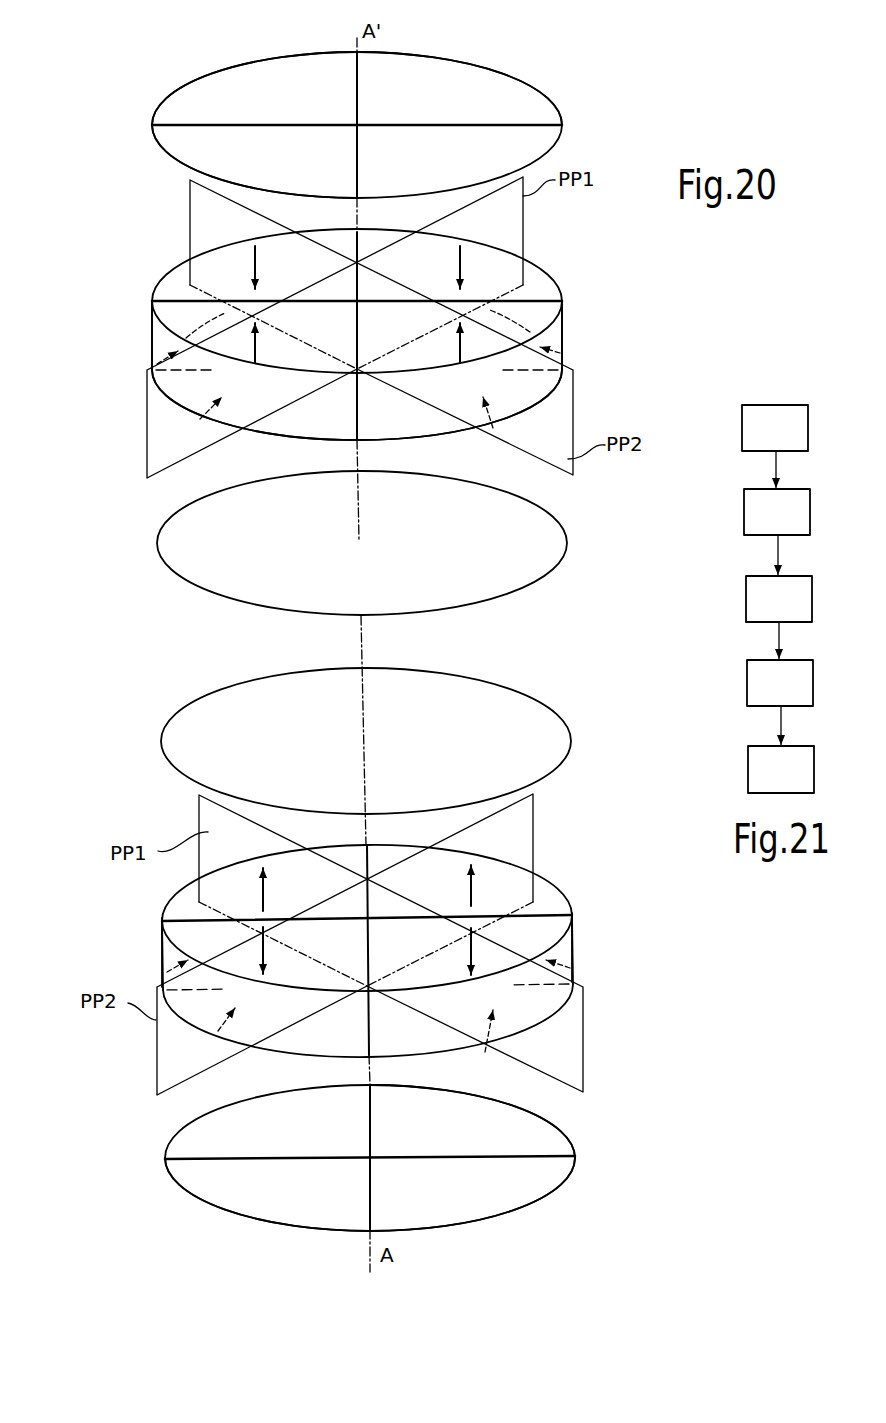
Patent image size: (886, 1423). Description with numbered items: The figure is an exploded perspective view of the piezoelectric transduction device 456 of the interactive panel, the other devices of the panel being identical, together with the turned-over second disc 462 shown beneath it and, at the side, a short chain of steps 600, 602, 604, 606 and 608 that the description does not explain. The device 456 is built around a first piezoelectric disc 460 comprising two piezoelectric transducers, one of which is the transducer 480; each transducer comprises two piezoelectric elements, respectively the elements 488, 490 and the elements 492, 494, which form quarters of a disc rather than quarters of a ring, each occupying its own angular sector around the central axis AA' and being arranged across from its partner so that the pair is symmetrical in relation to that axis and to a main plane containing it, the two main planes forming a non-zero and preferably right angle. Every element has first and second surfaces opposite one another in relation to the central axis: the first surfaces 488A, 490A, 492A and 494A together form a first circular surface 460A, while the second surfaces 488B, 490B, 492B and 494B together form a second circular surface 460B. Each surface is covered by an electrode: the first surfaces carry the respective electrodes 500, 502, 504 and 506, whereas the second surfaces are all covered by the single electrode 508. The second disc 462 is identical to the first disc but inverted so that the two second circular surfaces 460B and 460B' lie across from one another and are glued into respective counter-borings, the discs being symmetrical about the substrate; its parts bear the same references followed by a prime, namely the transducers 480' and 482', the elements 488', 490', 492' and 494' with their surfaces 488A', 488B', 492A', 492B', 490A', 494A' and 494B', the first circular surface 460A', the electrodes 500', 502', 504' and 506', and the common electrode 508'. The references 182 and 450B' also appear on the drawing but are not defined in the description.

In FIG. 20, the piezoelectric transduction device 456 is at (124, 92).
In FIG. 20, the second disc 462 is at (606, 722).
In FIG. 20, the electrode 500 is at (357, 108).
In FIG. 20, the electrode 502 is at (222, 161).
In FIG. 20, the electrode 504 is at (254, 71).
In FIG. 20, the electrode 506 is at (493, 91).
In FIG. 20, the electrode 508 is at (397, 543).
In FIG. 20, the first piezoelectric disc 460 is at (606, 291).
In FIG. 20, the first circular surface 460A is at (357, 220).
In FIG. 20, the second circular surface 460B is at (357, 426).
In FIG. 20, the piezoelectric element 488 is at (598, 310).
In FIG. 20, the first surface 488A is at (540, 239).
In FIG. 20, the second surface 488B is at (577, 331).
In FIG. 20, the piezoelectric element 492 is at (140, 311).
In FIG. 20, the first surface 492A is at (316, 201).
In FIG. 20, the second surface 492B is at (137, 338).
In FIG. 20, the piezoelectric element 490 is at (357, 441).
In FIG. 20, the first surface 490A is at (296, 287).
In FIG. 20, the second surface 490B is at (200, 416).
In FIG. 20, the piezoelectric element 494 is at (524, 416).
In FIG. 20, the first surface 494A is at (391, 379).
In FIG. 20, the second surface 494B is at (481, 478).
In FIG. 20, the piezoelectric transducer 480 is at (381, 309).
In FIG. 20, the light beam 182 is at (228, 239).
In FIG. 20, the electrode 508' is at (340, 741).
In FIG. 20, the piezoelectric transducer 480' is at (340, 939).
In FIG. 20, the piezoelectric transducer 482' is at (393, 944).
In FIG. 20, the piezoelectric element 488' is at (128, 935).
In FIG. 20, the piezoelectric element 492' is at (610, 932).
In FIG. 20, the first surface 488A' is at (123, 955).
In FIG. 20, the second surface 488B' is at (311, 824).
In FIG. 20, the first surface 492A' is at (610, 952).
In FIG. 20, the second surface 492B' is at (456, 806).
In FIG. 20, the first circular surface 460A' is at (367, 1034).
In FIG. 20, the second circular surface 460B' is at (367, 844).
In FIG. 20, the lower surface element 450B' is at (407, 1005).
In FIG. 20, the piezoelectric element 490' is at (564, 1027).
In FIG. 20, the first surface 490A' is at (488, 1093).
In FIG. 20, the piezoelectric element 494' is at (288, 1079).
In FIG. 20, the first surface 494A' is at (152, 1033).
In FIG. 20, the second surface 494B' is at (328, 990).
In FIG. 20, the electrode 500' is at (340, 1158).
In FIG. 20, the electrode 502' is at (472, 1208).
In FIG. 20, the electrode 504' is at (509, 1121).
In FIG. 20, the electrode 506' is at (260, 1195).
In FIG. 21, the method step 600 is at (775, 428).
In FIG. 21, the method step 602 is at (777, 512).
In FIG. 21, the method step 604 is at (779, 599).
In FIG. 21, the method step 606 is at (780, 683).
In FIG. 21, the method step 608 is at (781, 769).